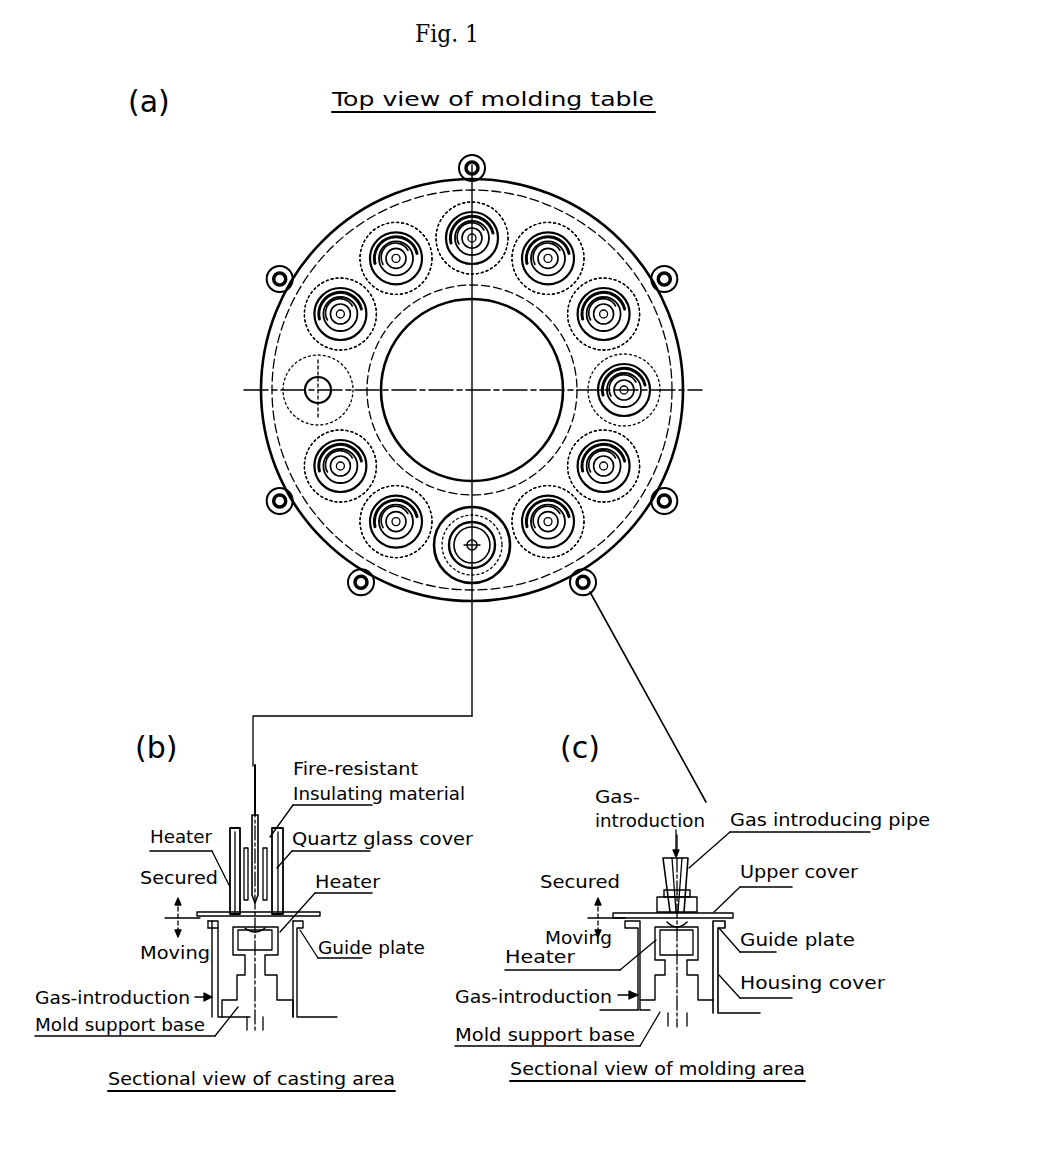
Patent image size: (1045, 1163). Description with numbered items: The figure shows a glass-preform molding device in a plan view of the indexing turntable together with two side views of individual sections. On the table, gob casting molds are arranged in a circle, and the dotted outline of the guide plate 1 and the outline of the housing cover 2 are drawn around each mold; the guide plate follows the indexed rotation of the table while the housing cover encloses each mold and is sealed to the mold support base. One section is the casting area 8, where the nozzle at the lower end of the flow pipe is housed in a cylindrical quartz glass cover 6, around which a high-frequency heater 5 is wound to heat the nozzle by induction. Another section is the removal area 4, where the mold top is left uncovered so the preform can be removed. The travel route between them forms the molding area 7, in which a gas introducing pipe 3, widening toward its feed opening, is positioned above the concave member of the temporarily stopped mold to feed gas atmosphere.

The outline of guide plate 1 is at (557, 332).
The outline of housing cover 2 is at (770, 216).
The gas introducing pipe 3 is at (645, 376).
The removal area 4 is at (306, 389).
The heater 5 is at (478, 518).
The quartz glass cover 6 is at (458, 575).
The molding area 7 is at (530, 752).
The casting area 8 is at (362, 730).